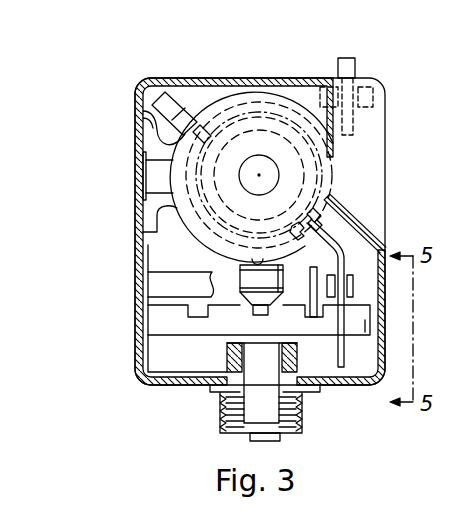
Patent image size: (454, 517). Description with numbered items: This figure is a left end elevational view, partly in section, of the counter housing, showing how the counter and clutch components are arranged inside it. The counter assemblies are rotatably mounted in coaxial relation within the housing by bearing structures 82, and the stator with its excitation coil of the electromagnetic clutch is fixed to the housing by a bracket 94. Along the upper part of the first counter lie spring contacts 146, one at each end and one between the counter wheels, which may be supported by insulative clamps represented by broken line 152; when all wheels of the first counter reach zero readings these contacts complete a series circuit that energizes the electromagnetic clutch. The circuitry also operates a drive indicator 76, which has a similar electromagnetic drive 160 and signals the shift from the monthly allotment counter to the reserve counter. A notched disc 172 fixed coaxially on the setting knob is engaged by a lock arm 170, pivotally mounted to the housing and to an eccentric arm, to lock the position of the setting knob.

The insulative clamps 152 is at (149, 91).
The spring contacts 146 is at (170, 112).
The bracket 94 is at (148, 113).
The bearing structures 82 is at (163, 175).
The drive indicator 76 is at (352, 65).
The electromagnetic drive 160 is at (373, 98).
The notched disc 172 is at (312, 168).
The lock arm 170 is at (337, 242).